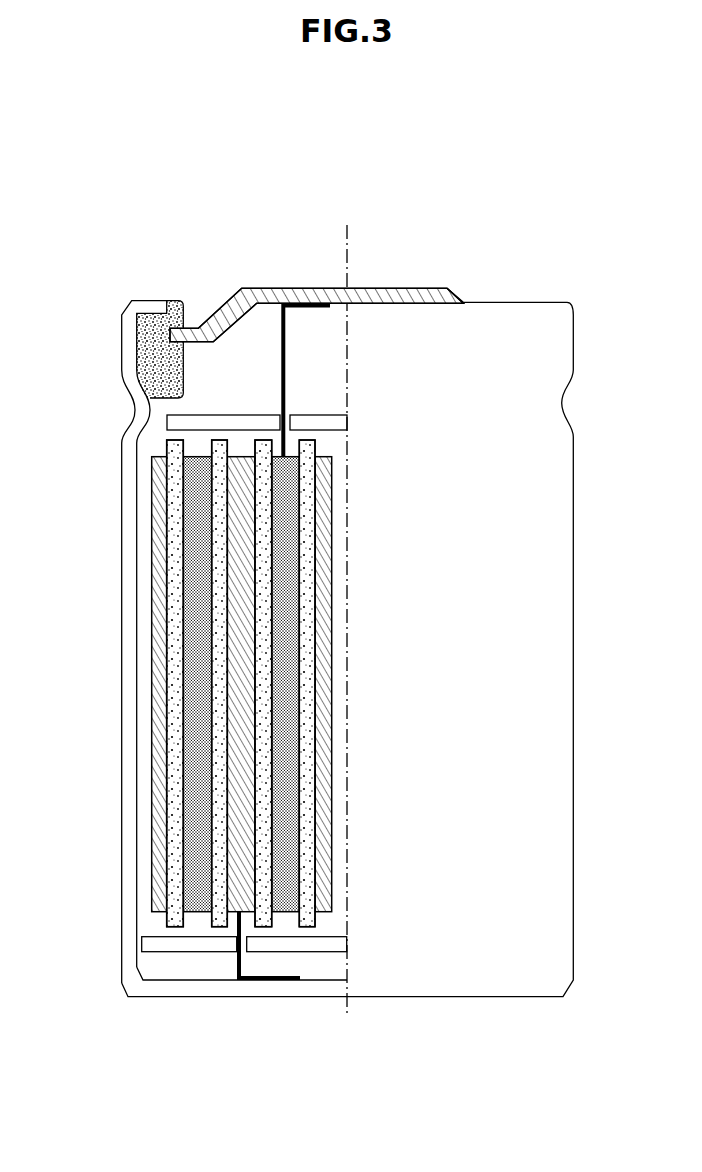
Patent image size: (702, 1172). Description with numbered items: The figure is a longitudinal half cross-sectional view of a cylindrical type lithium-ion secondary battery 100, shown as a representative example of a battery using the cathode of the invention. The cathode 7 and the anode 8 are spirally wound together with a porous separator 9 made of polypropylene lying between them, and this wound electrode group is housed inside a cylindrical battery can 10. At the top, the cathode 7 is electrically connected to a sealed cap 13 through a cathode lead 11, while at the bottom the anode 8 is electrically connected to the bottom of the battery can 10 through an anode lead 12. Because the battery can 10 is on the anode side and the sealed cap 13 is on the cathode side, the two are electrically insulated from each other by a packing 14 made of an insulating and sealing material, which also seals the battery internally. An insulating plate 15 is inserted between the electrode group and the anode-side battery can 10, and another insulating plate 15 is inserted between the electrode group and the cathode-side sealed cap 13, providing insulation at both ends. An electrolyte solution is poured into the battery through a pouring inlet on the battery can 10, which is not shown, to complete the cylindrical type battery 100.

The cylindrical type battery 100 is at (432, 227).
The battery can 10 is at (121, 601).
The sealed cap 13 is at (327, 288).
The packing 14 is at (150, 356).
The insulating plate 15 is at (167, 425).
The cathode lead 11 is at (283, 326).
The anode lead 12 is at (238, 968).
The cathode 7 is at (290, 913).
The anode 8 is at (237, 694).
The porous separator 9 is at (167, 922).